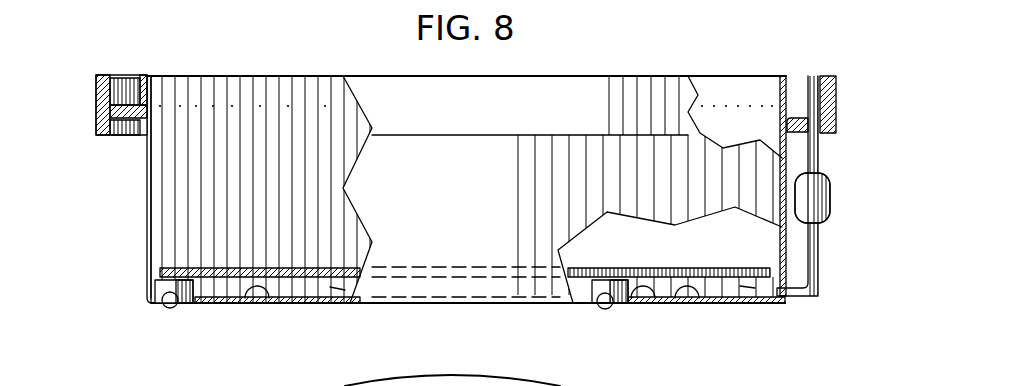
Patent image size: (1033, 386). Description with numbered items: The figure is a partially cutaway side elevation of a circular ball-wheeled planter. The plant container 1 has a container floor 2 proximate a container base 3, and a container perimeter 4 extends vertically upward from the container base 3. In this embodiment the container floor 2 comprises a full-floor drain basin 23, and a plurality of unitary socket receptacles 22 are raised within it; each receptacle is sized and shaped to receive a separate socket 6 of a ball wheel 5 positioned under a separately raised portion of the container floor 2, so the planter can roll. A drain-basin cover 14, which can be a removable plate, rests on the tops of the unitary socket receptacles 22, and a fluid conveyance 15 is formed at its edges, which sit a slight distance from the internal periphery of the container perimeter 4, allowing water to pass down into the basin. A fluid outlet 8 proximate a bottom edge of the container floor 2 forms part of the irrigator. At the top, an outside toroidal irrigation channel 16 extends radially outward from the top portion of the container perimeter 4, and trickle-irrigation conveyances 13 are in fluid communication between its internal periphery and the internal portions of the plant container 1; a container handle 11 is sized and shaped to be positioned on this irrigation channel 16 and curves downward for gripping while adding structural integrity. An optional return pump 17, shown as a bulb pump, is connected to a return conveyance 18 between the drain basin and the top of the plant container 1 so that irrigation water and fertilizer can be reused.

The plant container 1 is at (100, 318).
The container floor 2 is at (273, 278).
The container base 3 is at (104, 274).
The container perimeter 4 is at (148, 222).
The ball wheels 5 is at (168, 307).
The sockets 6 is at (183, 303).
The fluid outlet 8 is at (788, 298).
The container handle 11 is at (97, 134).
The trickle-irrigation conveyances 13 is at (237, 108).
The drain-basin cover 14 is at (325, 273).
The fluid conveyance 15 is at (778, 268).
The outside toroidal irrigation channel 16 is at (124, 93).
The return pump 17 is at (831, 183).
The return conveyance 18 is at (837, 80).
The unitary socket receptacles 22 is at (197, 283).
The full-floor drain basin 23 is at (340, 290).